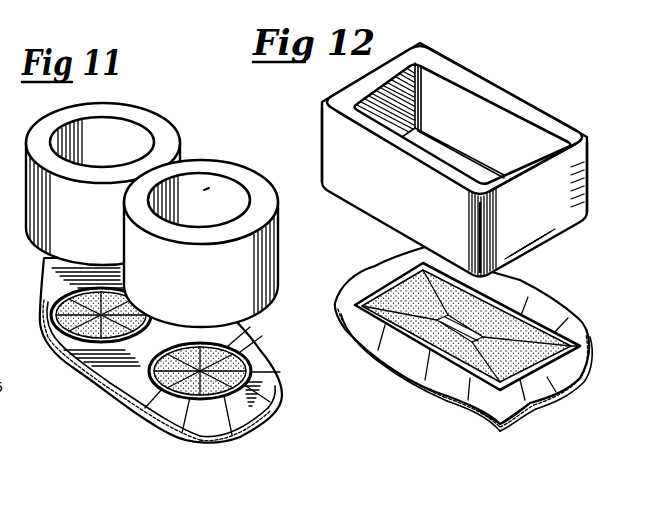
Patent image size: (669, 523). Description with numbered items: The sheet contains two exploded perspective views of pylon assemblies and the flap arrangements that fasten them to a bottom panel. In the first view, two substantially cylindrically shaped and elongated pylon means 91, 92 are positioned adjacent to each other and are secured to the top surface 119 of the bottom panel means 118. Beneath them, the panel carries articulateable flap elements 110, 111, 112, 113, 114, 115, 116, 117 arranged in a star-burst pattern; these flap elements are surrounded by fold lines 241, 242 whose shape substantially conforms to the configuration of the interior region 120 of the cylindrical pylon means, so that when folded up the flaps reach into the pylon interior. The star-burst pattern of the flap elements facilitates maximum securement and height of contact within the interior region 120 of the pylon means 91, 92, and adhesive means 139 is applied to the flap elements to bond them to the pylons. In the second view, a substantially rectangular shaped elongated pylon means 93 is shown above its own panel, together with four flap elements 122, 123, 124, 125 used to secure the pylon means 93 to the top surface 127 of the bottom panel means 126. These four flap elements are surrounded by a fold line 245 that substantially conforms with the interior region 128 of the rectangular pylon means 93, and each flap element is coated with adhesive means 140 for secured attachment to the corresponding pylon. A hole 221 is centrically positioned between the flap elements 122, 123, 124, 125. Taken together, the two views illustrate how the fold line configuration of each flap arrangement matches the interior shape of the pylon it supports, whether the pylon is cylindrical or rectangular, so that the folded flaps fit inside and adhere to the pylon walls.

In FIG. 11, the pylon means 91 is at (155, 114).
In FIG. 11, the pylon means 92 is at (255, 167).
In FIG. 12, the pylon means 93 is at (471, 70).
In FIG. 11, the flap element 110 is at (276, 388).
In FIG. 11, the flap element 111 is at (252, 420).
In FIG. 11, the flap element 112 is at (167, 428).
In FIG. 11, the flap element 113 is at (113, 388).
In FIG. 11, the flap element 114 is at (152, 368).
In FIG. 11, the flap element 115 is at (188, 346).
In FIG. 11, the flap element 116 is at (244, 340).
In FIG. 11, the flap element 117 is at (264, 356).
In FIG. 11, the bottom panel means 118 is at (279, 407).
In FIG. 11, the top surface 119 is at (232, 440).
In FIG. 11, the interior region 120 is at (204, 190).
In FIG. 12, the flap element 122 is at (525, 412).
In FIG. 12, the flap element 123 is at (398, 370).
In FIG. 12, the flap element 124 is at (385, 266).
In FIG. 12, the flap element 125 is at (528, 285).
In FIG. 12, the bottom panel means 126 is at (473, 423).
In FIG. 12, the top surface 127 is at (462, 409).
In FIG. 12, the interior region 128 is at (506, 121).
In FIG. 11, the adhesive means 139 is at (128, 410).
In FIG. 12, the adhesive means 140 is at (430, 388).
In FIG. 12, the hole 221 is at (567, 307).
In FIG. 11, the fold line 241 is at (45, 341).
In FIG. 11, the fold line 242 is at (188, 438).
In FIG. 12, the fold line 245 is at (566, 391).